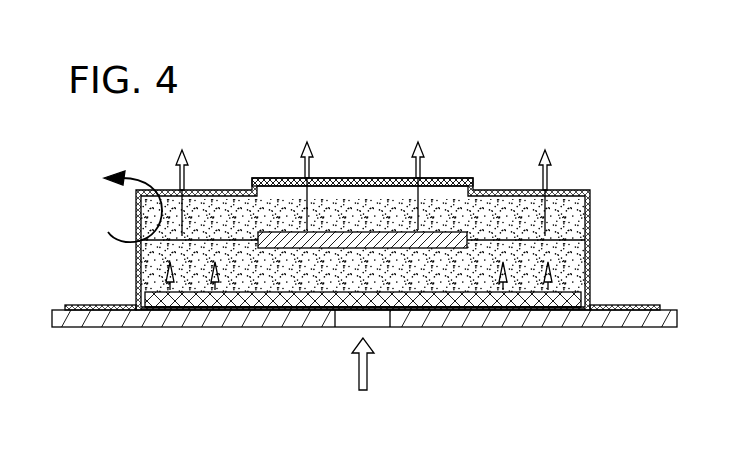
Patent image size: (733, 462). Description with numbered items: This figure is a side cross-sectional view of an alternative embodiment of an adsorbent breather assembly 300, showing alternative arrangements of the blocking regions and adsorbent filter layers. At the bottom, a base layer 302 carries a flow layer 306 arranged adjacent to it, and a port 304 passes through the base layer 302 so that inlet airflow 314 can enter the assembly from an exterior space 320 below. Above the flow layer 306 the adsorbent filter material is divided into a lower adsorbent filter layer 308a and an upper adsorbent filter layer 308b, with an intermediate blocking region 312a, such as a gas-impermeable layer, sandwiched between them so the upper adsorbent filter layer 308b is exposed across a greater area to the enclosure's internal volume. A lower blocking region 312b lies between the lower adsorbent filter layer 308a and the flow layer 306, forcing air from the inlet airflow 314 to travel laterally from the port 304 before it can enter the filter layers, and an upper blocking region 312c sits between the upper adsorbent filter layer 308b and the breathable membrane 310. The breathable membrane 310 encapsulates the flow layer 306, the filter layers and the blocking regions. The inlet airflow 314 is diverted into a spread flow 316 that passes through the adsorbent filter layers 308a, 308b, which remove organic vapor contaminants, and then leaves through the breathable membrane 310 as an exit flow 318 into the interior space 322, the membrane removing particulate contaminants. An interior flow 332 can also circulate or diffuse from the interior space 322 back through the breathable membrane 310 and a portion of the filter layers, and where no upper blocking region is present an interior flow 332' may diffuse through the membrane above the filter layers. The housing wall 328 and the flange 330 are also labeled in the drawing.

The adsorbent breather assembly 300 is at (566, 113).
The base layer 302 is at (433, 328).
The port 304 is at (344, 329).
The flow layer 306 is at (567, 311).
The lower adsorbent filter layer 308a is at (590, 268).
The upper adsorbent filter layer 308b is at (590, 223).
The breathable membrane 310 is at (480, 222).
The intermediate blocking region 312a is at (336, 232).
The lower blocking region 312b is at (233, 315).
The upper blocking region 312c is at (254, 188).
The inlet airflow 314 is at (368, 368).
The spread flow 316 is at (165, 308).
The exit flow 318 is at (178, 184).
The exterior space 320 is at (378, 432).
The interior space 322 is at (376, 121).
The housing 328 is at (132, 273).
The attachment flange 330 is at (88, 310).
The interior flow 332 is at (101, 206).
The interior flow 332' is at (364, 164).